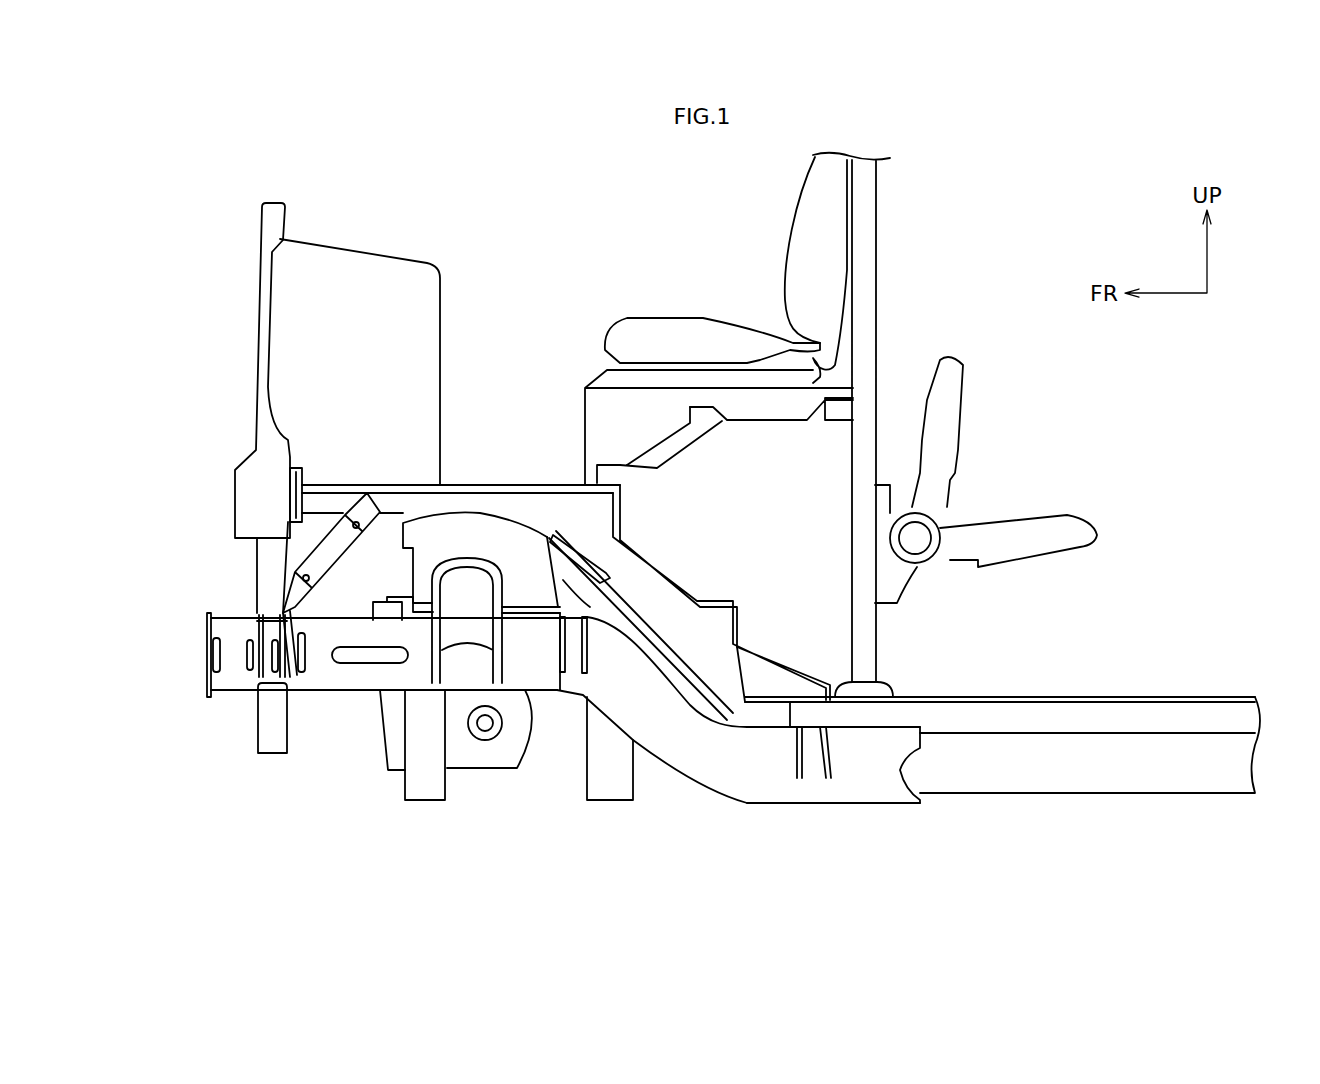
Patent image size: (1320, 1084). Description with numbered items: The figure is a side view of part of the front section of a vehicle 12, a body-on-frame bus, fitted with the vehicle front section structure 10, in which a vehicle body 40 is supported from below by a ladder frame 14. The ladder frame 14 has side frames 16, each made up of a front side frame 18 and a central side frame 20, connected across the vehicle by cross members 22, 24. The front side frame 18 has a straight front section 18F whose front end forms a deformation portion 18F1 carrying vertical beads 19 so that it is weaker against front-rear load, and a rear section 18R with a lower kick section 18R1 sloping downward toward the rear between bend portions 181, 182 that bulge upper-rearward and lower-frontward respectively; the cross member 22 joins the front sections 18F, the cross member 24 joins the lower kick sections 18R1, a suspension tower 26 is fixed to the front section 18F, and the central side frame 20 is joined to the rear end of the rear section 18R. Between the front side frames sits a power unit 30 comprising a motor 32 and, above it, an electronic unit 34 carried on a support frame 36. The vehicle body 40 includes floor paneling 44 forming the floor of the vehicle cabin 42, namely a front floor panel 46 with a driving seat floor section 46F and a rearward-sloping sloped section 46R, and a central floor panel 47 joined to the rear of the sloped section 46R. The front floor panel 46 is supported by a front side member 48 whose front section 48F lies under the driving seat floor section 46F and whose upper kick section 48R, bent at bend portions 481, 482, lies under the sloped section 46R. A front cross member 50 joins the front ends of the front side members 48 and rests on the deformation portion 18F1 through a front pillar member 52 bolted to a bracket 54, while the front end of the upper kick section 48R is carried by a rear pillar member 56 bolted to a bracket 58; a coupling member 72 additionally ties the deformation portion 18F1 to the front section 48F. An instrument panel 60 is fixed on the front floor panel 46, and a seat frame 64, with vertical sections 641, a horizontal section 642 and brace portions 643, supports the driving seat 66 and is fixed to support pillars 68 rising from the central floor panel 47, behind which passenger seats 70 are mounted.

The vehicle front section structure 10 is at (327, 834).
The vehicle 12 is at (503, 211).
The ladder frame 14 is at (886, 843).
The side frame 16 is at (990, 812).
The front side frame 18 is at (563, 707).
The front section of front side frame 18F is at (360, 680).
The deformation portion 18F1 is at (228, 690).
The rear section of front side frame 18R is at (790, 803).
The lower kick section 18R1 is at (680, 748).
The bend portion 181 is at (627, 653).
The bend portion 182 is at (755, 780).
The beads 19 is at (278, 678).
The central side frame 20 is at (1123, 793).
The cross member 22 is at (425, 800).
The cross member 24 is at (607, 800).
The suspension tower 26 is at (508, 633).
The power unit 30 is at (443, 616).
The motor 32 is at (492, 760).
The electronic unit 34 is at (437, 533).
The support frame 36 is at (377, 607).
The vehicle body 40 is at (209, 402).
The vehicle cabin 42 is at (819, 425).
The floor paneling 44 is at (992, 665).
The front floor panel 46 is at (536, 474).
The driving seat floor section 46F is at (498, 486).
The sloped section 46R is at (713, 600).
The central floor panel 47 is at (1113, 695).
The front side member 48 is at (521, 531).
The front section of front side member 48F is at (463, 502).
The upper kick section 48R is at (680, 640).
The bend portion 481 is at (603, 517).
The bend portion 482 is at (740, 702).
The front cross member 50 is at (297, 462).
The front pillar member 52 is at (255, 569).
The bracket 54 is at (258, 628).
The rear pillar member 56 is at (578, 580).
The bracket 58 is at (590, 643).
The instrument panel 60 is at (367, 262).
The seat frame 64 is at (793, 434).
The vertical section 641 is at (583, 433).
The horizontal section 642 is at (752, 408).
The brace portion 643 is at (680, 440).
The driving seat 66 is at (685, 318).
The support pillar 68 is at (887, 340).
The passenger seat 70 is at (1027, 513).
The coupling member 72 is at (345, 556).